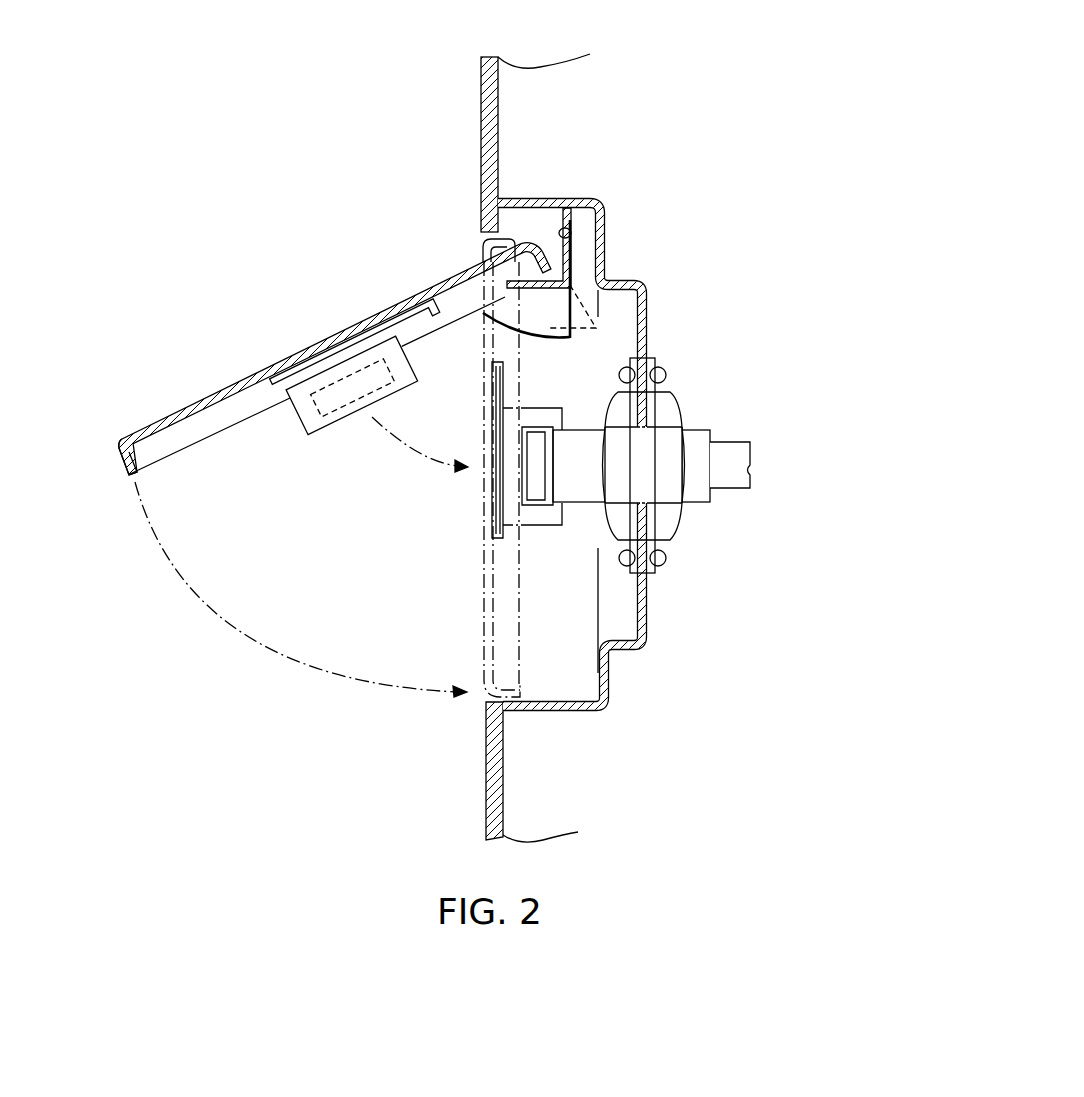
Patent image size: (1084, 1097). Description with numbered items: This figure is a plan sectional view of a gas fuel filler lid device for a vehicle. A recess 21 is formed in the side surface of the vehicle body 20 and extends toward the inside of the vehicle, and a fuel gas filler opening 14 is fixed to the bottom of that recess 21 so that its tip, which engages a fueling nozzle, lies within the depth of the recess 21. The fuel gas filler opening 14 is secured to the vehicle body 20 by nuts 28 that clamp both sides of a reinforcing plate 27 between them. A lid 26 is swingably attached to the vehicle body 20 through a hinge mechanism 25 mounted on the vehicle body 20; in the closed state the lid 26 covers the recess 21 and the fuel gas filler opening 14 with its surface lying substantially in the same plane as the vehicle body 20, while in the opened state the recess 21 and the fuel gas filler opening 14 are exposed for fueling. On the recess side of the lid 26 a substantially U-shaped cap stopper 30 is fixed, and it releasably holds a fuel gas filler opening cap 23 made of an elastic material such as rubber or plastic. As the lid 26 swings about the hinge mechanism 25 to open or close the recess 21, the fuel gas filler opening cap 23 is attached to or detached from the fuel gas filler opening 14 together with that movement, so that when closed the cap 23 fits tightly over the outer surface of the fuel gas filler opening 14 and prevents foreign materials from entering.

The vehicle body 20 is at (442, 110).
The recess 21 is at (548, 630).
The hinge mechanism 25 is at (570, 258).
The cap stopper 30 is at (270, 386).
The lid 26 is at (120, 445).
The fuel gas filler opening cap 23 is at (298, 428).
The reinforcing plate 27 is at (672, 385).
The fuel gas filler opening 14 is at (580, 417).
The nuts 28 is at (683, 520).